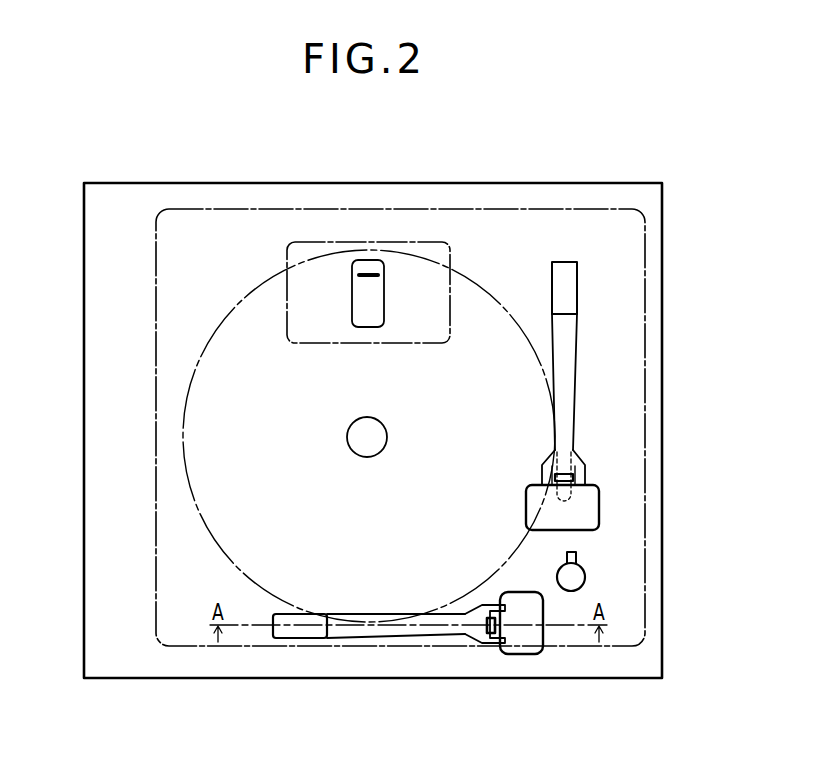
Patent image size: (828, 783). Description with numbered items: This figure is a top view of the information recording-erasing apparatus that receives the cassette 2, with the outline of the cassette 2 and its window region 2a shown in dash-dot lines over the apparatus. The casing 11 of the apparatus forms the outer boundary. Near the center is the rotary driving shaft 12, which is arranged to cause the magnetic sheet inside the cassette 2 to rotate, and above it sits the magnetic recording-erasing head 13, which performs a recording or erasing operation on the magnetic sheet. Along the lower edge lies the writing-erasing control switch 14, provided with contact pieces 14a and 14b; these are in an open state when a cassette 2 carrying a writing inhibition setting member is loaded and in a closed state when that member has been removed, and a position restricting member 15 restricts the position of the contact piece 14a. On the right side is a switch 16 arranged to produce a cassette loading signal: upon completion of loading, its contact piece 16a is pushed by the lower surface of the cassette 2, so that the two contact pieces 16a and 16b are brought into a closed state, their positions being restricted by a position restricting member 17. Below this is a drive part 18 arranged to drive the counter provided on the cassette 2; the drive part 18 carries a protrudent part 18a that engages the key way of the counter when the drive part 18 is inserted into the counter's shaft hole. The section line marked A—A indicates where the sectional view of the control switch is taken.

The cassette 2 is at (494, 208).
The cartridge window 2a is at (403, 242).
The casing 11 is at (567, 188).
The rotary driving shaft 12 is at (352, 422).
The magnetic recording-erasing head 13 is at (370, 272).
The writing-erasing control switch 14 is at (310, 633).
The contact piece 14a is at (478, 643).
The contact piece 14b is at (490, 637).
The position restricting member 15 is at (530, 642).
The switch 16 is at (577, 292).
The contact piece 16a is at (585, 465).
The contact piece 16b is at (583, 478).
The position restricting member 17 is at (593, 505).
The drive part 18 is at (584, 579).
The protrudent part 18a is at (576, 557).